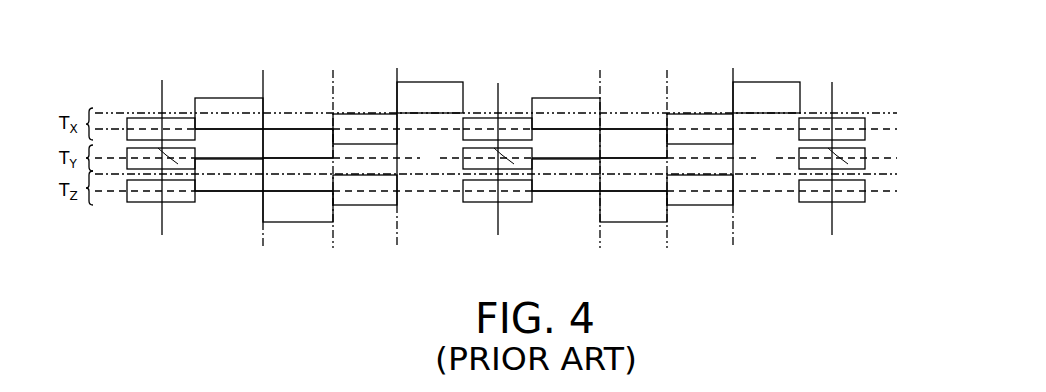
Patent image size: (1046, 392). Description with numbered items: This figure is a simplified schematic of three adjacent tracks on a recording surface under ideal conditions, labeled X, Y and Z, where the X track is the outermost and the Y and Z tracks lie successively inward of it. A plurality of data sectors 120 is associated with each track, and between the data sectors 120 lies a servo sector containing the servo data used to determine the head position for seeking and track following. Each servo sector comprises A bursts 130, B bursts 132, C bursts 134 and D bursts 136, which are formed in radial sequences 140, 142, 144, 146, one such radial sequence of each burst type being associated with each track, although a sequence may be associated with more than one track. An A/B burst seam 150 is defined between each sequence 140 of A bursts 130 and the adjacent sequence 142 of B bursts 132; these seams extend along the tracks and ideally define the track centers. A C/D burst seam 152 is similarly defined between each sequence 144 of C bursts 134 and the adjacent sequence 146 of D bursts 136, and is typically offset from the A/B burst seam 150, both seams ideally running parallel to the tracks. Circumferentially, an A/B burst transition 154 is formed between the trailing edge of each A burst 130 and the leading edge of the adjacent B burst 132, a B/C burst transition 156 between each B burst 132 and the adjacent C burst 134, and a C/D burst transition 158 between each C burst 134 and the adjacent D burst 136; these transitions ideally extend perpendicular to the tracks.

The data sectors 120 is at (175, 123).
The A bursts 130 is at (245, 103).
The B bursts 132 is at (312, 138).
The C bursts 134 is at (378, 118).
The D bursts 136 is at (443, 90).
The radial sequence of A bursts 140 is at (899, 81).
The radial sequence of B bursts 142 is at (899, 115).
The radial sequence of C bursts 144 is at (899, 145).
The radial sequence of D bursts 146 is at (899, 178).
The A/B burst seam 150 is at (108, 158).
The C/D burst seam 152 is at (857, 112).
The A/B burst transition 154 is at (262, 238).
The B/C burst transition 156 is at (333, 237).
The C/D burst transition 158 is at (402, 228).